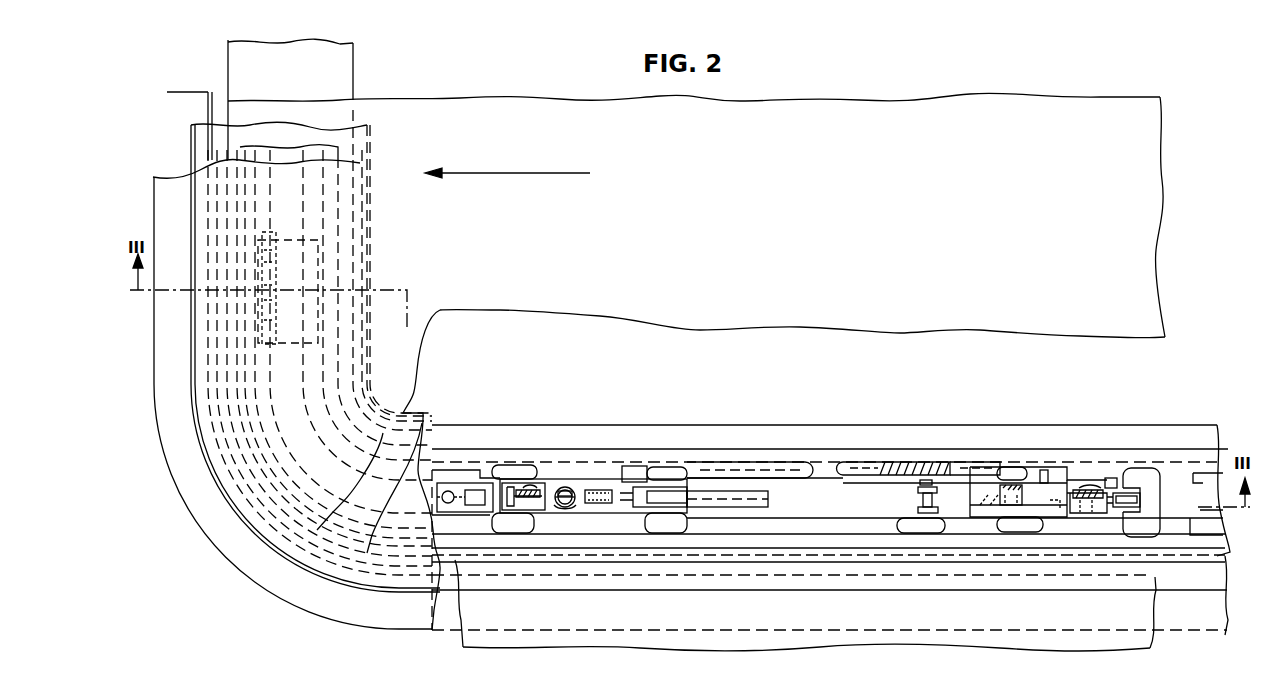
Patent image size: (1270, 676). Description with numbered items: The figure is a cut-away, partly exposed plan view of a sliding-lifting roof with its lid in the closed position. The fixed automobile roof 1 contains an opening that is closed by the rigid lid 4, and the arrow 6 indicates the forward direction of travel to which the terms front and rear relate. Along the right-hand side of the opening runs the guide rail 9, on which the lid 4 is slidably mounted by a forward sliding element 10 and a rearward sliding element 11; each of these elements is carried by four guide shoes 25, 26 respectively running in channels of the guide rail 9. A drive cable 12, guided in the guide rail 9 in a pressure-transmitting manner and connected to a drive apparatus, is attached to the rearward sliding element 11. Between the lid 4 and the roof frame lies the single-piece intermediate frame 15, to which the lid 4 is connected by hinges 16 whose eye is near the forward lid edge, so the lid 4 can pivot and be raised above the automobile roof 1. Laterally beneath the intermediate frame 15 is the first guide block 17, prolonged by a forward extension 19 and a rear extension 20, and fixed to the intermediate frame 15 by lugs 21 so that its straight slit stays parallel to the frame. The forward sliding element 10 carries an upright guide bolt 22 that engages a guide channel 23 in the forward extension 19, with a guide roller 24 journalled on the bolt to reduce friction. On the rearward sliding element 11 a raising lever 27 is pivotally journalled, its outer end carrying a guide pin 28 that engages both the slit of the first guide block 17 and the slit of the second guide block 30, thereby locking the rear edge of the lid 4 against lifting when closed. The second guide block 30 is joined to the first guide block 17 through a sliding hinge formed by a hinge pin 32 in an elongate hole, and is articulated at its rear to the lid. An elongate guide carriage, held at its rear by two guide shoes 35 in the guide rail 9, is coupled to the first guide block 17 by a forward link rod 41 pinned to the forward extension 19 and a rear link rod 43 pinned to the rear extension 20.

The automobile roof 1 is at (1140, 648).
The lid 4 is at (782, 213).
The arrow 6 is at (527, 172).
The guide rail 9 is at (457, 472).
The forward sliding element 10 is at (550, 465).
The rearward sliding element 11 is at (963, 462).
The drive cable 12 is at (898, 462).
The intermediate frame 15 is at (305, 125).
The hinges 16 is at (293, 241).
The first guide block 17 is at (770, 462).
The forward extension 19 is at (512, 503).
The rear extension 20 is at (1097, 513).
The lugs 21 is at (540, 500).
The guide bolt 22 is at (570, 488).
The guide channel 23 is at (570, 509).
The guide roller 24 is at (567, 491).
The guide shoes 25 is at (520, 465).
The guide shoes 26 is at (1023, 467).
The raising lever 27 is at (960, 505).
The guide pin 28 is at (930, 500).
The second guide block 30 is at (787, 500).
The hinge pin 32 is at (660, 505).
The guide shoes 35 is at (1145, 470).
The forward link rod 41 is at (618, 503).
The rear link rod 43 is at (1140, 498).